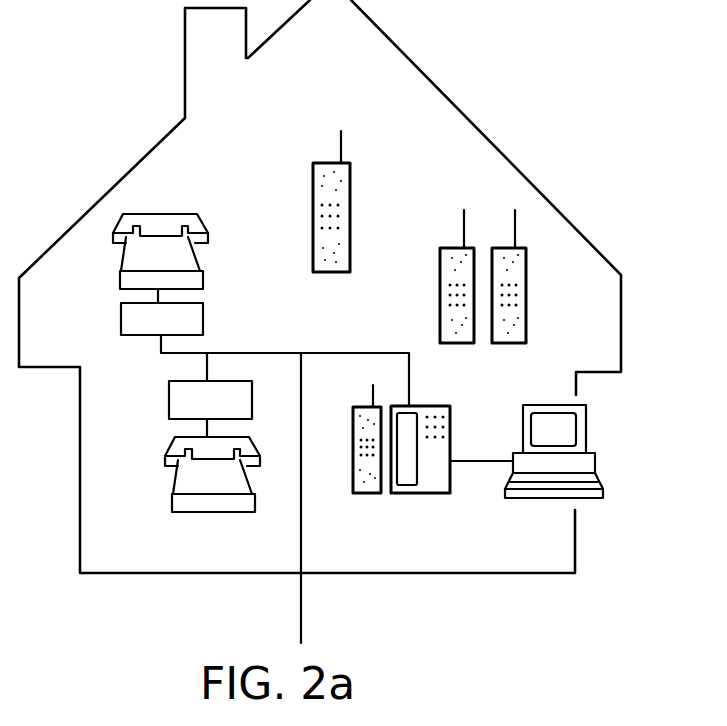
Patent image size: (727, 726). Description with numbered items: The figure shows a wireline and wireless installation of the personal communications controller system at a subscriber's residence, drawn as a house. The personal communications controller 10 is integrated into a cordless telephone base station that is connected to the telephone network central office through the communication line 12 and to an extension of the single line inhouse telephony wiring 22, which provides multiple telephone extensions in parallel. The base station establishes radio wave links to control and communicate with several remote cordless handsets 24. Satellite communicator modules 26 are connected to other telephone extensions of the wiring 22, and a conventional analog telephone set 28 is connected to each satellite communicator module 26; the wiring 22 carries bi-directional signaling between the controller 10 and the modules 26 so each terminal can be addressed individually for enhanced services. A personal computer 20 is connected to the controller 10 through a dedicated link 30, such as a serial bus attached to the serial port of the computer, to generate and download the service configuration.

The personal communications controller 10 is at (418, 493).
The communication line 12 is at (300, 606).
The personal computer 20 is at (595, 463).
The inhouse telephony wiring 22 is at (272, 353).
The cordless handset 24 is at (350, 215).
The satellite communicator module 26 is at (143, 335).
The analog telephone set 28 is at (168, 212).
The dedicated link 30 is at (482, 462).